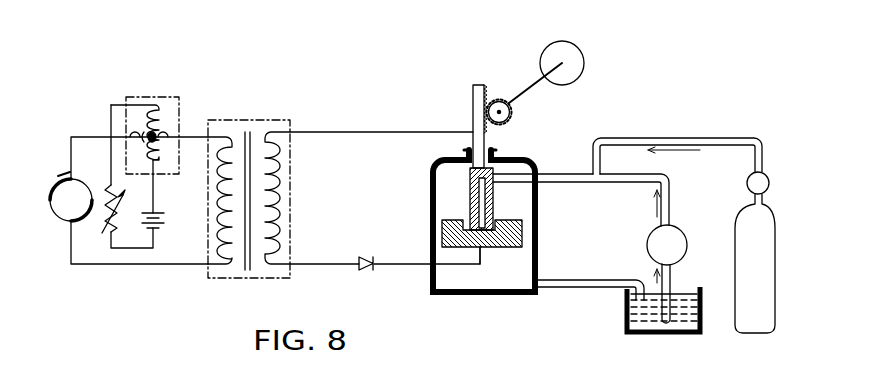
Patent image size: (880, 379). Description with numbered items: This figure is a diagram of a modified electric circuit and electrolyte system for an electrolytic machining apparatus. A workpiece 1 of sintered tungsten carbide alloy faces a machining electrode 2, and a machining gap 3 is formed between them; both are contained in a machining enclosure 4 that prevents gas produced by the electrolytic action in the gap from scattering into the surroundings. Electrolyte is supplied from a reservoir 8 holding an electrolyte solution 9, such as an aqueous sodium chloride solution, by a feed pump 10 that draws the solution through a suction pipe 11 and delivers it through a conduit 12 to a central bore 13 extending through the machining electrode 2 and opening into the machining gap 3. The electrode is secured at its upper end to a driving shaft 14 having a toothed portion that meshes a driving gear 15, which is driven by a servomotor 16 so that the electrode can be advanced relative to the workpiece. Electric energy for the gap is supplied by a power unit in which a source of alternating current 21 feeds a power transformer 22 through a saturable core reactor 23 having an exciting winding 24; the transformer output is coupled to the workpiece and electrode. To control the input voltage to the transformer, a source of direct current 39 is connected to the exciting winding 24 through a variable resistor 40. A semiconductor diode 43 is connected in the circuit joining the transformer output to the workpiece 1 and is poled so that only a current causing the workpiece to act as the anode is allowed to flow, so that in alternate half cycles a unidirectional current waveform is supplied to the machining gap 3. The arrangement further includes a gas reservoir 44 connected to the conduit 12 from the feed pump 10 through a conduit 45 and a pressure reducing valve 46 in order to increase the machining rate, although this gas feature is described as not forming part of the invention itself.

The workpiece 1 is at (501, 248).
The machining electrode 2 is at (473, 184).
The machining gap 3 is at (490, 248).
The machining enclosure 4 is at (484, 234).
The reservoir 8 is at (647, 335).
The electrolyte solution 9 is at (678, 322).
The feed pump 10 is at (649, 240).
The suction pipe 11 is at (671, 273).
The conduit 12 is at (568, 182).
The central bore 13 is at (489, 198).
The driving shaft 14 is at (473, 98).
The driving gear 15 is at (511, 119).
The servomotor 16 is at (544, 54).
The source of alternating current 21 is at (50, 199).
The power transformer 22 is at (243, 113).
The saturable core reactor 23 is at (142, 93).
The exciting winding 24 is at (160, 113).
The source of direct current 39 is at (162, 220).
The variable resistor 40 is at (105, 230).
The semiconductor diode 43 is at (368, 272).
The gas reservoir 44 is at (755, 263).
The conduit 45 is at (697, 137).
The pressure reducing valve 46 is at (770, 185).